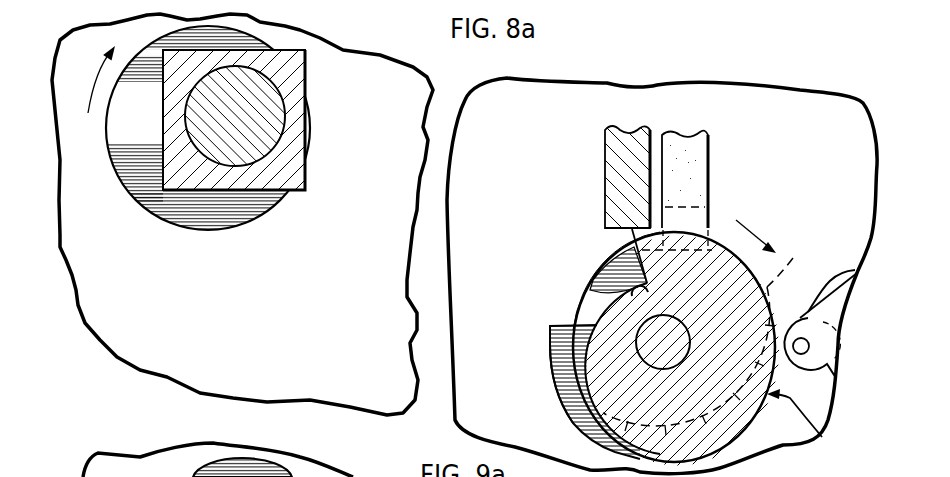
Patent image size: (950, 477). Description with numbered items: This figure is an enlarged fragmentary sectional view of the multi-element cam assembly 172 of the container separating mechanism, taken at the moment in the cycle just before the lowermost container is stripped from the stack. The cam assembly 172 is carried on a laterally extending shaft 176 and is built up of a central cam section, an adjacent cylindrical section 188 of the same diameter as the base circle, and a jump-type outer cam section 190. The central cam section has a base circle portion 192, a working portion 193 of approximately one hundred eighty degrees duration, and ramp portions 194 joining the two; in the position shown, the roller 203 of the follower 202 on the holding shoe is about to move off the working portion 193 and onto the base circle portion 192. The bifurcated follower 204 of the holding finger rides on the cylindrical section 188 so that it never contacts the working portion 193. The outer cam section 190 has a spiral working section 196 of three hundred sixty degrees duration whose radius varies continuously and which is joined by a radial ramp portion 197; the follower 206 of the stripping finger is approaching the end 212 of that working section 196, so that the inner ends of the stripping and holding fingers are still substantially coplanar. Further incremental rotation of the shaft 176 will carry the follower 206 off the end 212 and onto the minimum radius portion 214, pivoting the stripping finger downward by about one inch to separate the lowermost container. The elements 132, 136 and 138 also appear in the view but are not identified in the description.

The bearing block 132 is at (305, 130).
The shaft 136 is at (230, 116).
The rotor 138 is at (118, 135).
The cam assembly 172 is at (547, 395).
The shaft 176 is at (663, 342).
The cylindrical section 188 is at (593, 279).
The outer cam section 190 is at (822, 437).
The base circle portion 192 is at (616, 281).
The working portion 193 is at (549, 362).
The ramp portions 194 is at (553, 324).
The working section 196 is at (742, 440).
The radial ramp portion 197 is at (592, 289).
The follower 202 is at (834, 378).
The roller 203 is at (858, 274).
The bifurcated follower 204 is at (700, 156).
The follower 206 is at (620, 147).
The end of working section 212 is at (633, 230).
The minimum radius portion 214 is at (654, 289).